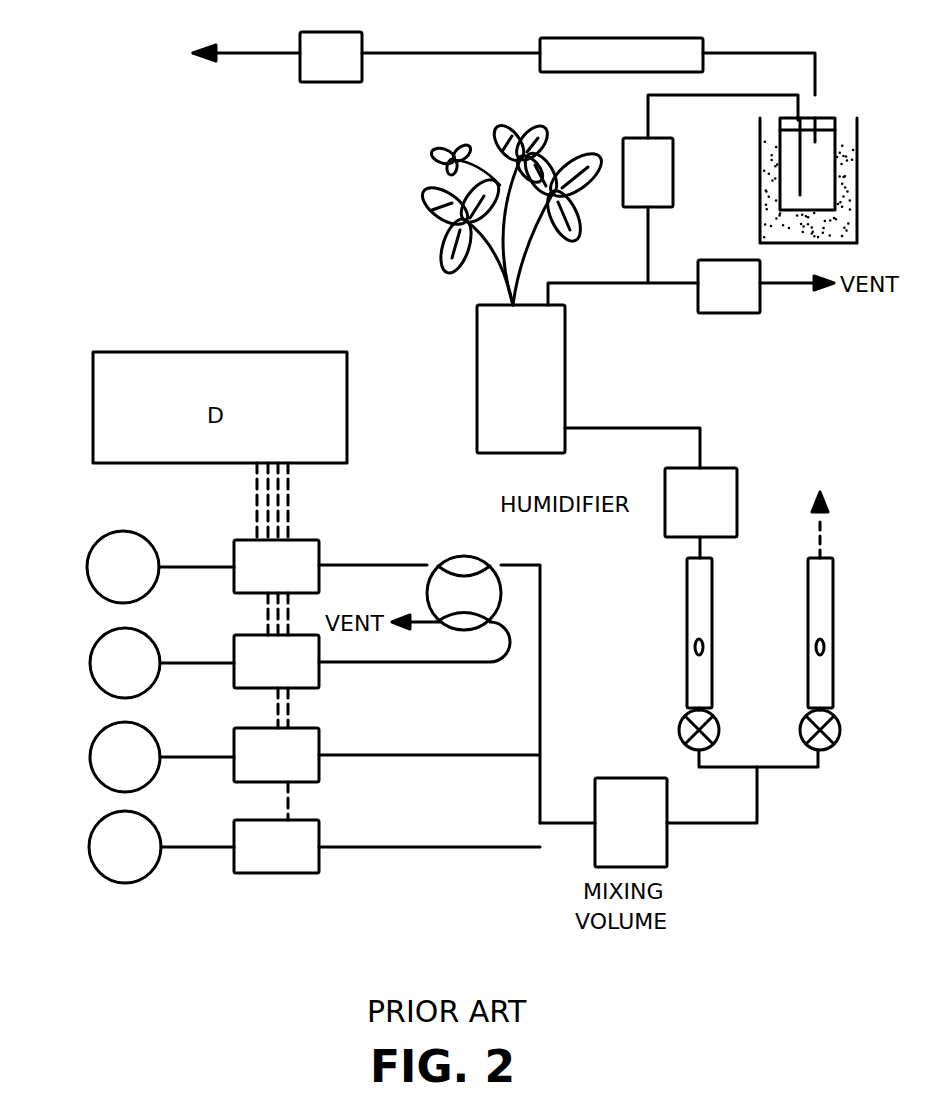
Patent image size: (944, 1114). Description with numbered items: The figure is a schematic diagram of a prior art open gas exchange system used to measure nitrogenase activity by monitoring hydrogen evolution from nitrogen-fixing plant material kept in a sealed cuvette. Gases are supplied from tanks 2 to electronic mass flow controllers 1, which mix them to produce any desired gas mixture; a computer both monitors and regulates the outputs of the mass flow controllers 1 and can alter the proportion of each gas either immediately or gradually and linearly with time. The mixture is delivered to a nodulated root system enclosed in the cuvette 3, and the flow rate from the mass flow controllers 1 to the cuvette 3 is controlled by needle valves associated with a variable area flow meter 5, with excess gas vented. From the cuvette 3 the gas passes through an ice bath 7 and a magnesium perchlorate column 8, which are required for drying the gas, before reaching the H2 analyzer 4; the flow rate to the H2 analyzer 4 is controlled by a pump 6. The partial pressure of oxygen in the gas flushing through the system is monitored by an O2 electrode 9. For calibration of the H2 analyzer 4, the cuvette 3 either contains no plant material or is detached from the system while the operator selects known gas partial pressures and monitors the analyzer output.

The electronic mass flow controllers 1 is at (234, 838).
The tanks 2 is at (95, 590).
The cuvette 3 is at (477, 381).
The H2 analyzer 4 is at (343, 32).
The variable area flow meter 5 is at (687, 623).
The pump 6 is at (673, 172).
The ice bath 7 is at (857, 186).
The magnesium perchlorate column 8 is at (634, 38).
The O2 electrode 9 is at (727, 313).